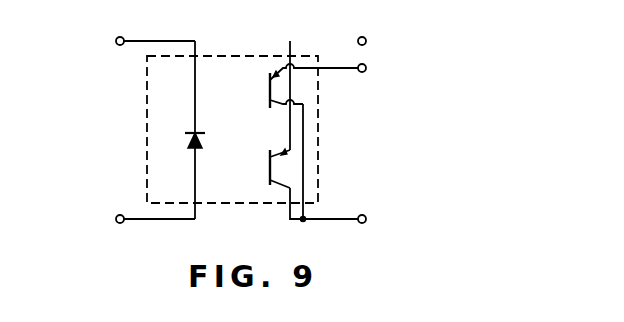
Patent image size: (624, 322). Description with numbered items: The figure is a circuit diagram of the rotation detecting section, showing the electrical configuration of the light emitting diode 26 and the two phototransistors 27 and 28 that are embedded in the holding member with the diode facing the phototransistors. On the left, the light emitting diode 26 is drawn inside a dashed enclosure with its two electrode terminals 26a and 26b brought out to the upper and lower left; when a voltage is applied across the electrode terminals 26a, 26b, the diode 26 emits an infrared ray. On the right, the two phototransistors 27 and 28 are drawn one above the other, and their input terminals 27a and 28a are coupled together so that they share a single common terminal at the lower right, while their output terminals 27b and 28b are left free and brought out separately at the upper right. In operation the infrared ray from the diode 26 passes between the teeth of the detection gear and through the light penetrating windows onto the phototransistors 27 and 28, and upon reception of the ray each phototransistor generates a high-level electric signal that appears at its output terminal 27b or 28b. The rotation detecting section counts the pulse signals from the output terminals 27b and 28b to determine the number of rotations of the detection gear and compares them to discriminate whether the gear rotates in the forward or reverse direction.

The light emitting diode 26 is at (188, 141).
The electrode terminal 26a is at (116, 41).
The electrode terminal 26b is at (116, 219).
The phototransistor 27 is at (270, 88).
The phototransistor 28 is at (270, 170).
The output terminal 27b is at (366, 68).
The output terminal 28b is at (366, 41).
The input terminal 27a is at (420, 222).
The input terminal 28a is at (366, 219).